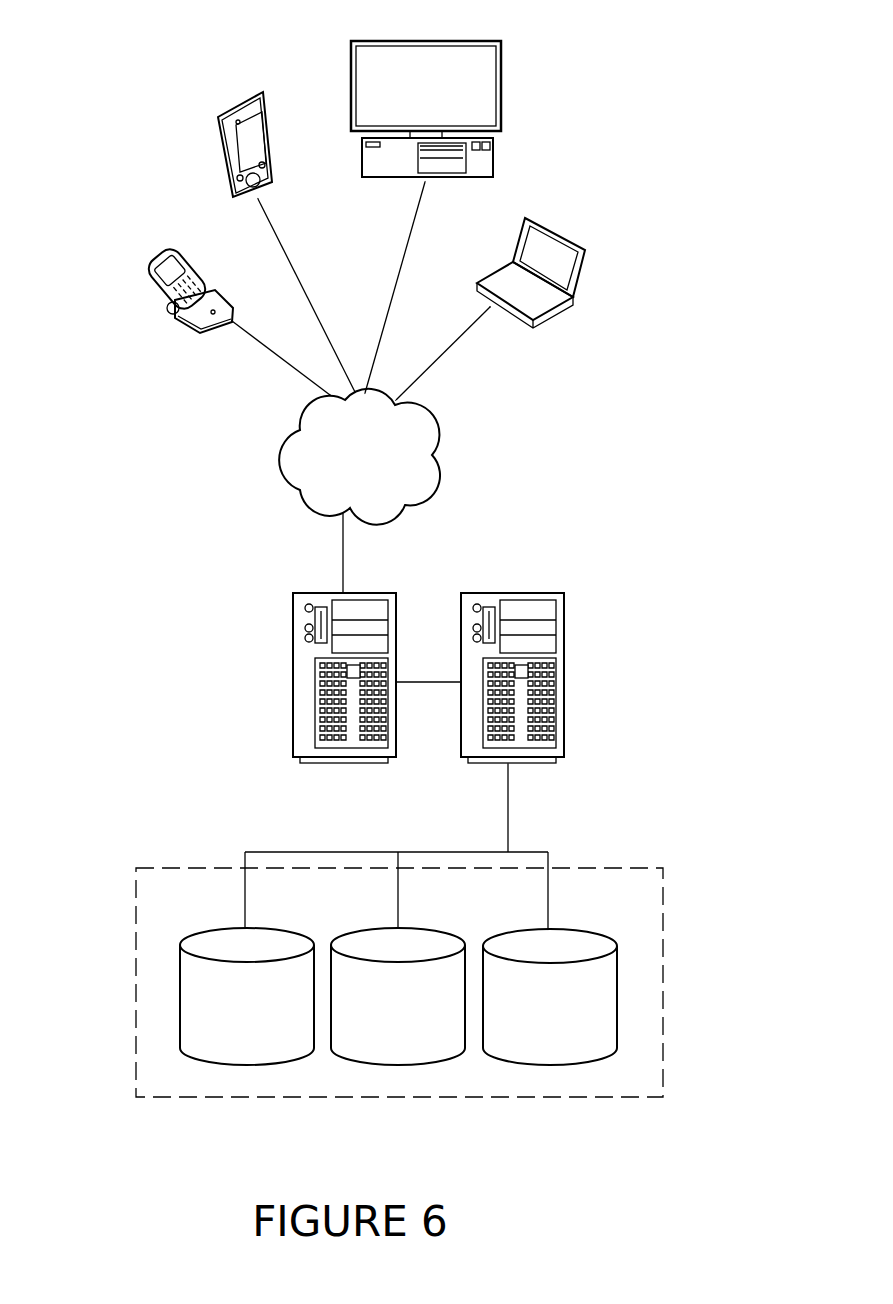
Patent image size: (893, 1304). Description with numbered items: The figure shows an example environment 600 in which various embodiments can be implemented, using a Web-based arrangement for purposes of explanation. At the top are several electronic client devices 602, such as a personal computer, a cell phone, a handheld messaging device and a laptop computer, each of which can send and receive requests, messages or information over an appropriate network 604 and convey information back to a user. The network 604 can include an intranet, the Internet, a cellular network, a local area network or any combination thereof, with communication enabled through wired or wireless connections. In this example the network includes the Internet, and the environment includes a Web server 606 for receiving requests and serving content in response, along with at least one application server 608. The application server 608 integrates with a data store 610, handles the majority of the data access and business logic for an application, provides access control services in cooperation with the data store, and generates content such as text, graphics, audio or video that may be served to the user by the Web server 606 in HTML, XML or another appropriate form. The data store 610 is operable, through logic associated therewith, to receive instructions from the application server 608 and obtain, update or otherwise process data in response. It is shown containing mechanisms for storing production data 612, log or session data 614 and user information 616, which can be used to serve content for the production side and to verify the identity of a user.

The environment 600 is at (702, 100).
The electronic client device 602 is at (305, 77).
The network 604 is at (284, 457).
The Web server 606 is at (292, 737).
The application server 608 is at (455, 748).
The data store 610 is at (168, 1097).
The production data 612 is at (268, 1063).
The session data 614 is at (413, 1063).
The user information 616 is at (570, 1063).